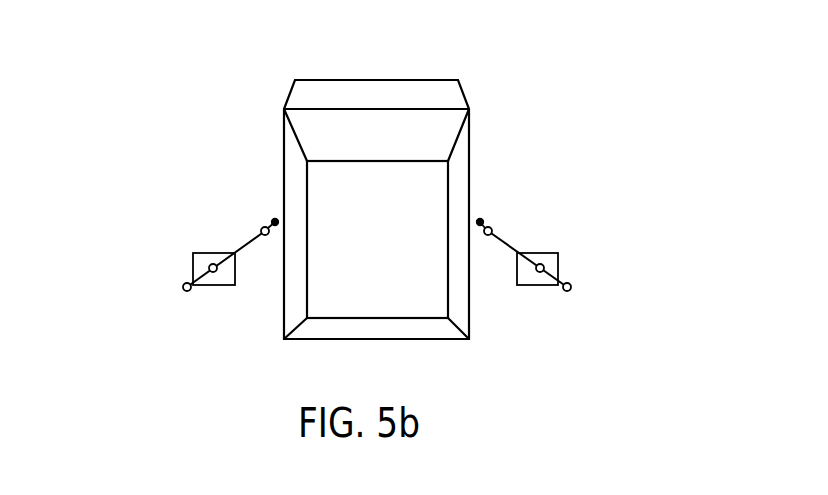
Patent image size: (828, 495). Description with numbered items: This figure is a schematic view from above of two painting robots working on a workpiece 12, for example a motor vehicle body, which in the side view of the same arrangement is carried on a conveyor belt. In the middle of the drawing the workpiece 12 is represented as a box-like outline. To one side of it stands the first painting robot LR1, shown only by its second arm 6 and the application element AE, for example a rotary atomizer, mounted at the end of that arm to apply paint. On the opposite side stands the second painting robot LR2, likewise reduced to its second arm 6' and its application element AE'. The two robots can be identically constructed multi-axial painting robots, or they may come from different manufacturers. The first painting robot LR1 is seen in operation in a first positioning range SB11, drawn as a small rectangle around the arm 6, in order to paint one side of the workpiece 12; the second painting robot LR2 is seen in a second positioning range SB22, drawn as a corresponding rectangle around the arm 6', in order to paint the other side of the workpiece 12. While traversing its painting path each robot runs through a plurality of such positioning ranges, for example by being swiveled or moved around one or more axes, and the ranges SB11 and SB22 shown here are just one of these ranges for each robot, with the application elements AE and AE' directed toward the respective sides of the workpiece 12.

The workpiece 12 is at (372, 80).
The second arm 6 is at (226, 243).
The second arm 6' is at (527, 243).
The application element AE is at (256, 195).
The application element AE' is at (502, 195).
The first painting robot LR1 is at (167, 214).
The second painting robot LR2 is at (577, 209).
The first positioning range SB11 is at (216, 293).
The second positioning range SB22 is at (527, 293).